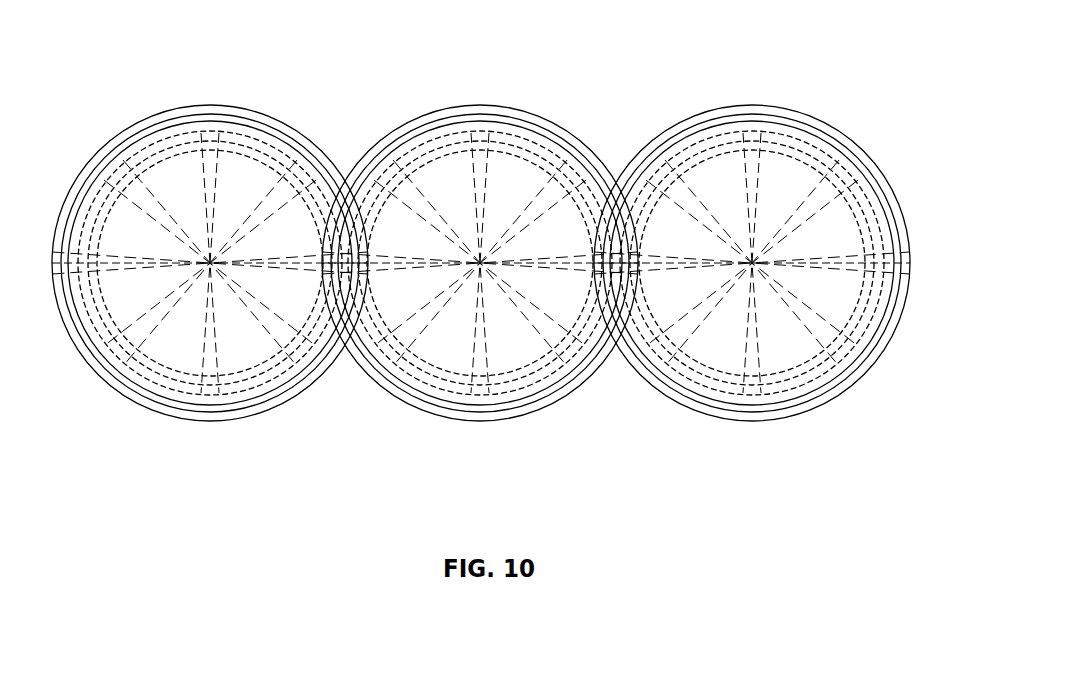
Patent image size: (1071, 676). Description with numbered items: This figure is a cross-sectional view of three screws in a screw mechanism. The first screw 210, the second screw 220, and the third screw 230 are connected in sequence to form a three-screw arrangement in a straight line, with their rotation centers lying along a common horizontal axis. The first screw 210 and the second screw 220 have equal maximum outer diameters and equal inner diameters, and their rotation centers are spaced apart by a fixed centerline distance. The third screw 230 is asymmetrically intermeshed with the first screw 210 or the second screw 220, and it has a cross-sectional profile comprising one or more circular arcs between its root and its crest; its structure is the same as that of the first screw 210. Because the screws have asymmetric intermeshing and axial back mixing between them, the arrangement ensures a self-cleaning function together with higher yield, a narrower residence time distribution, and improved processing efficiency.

The first screw 210 is at (106, 158).
The second screw 220 is at (600, 182).
The third screw 230 is at (859, 157).